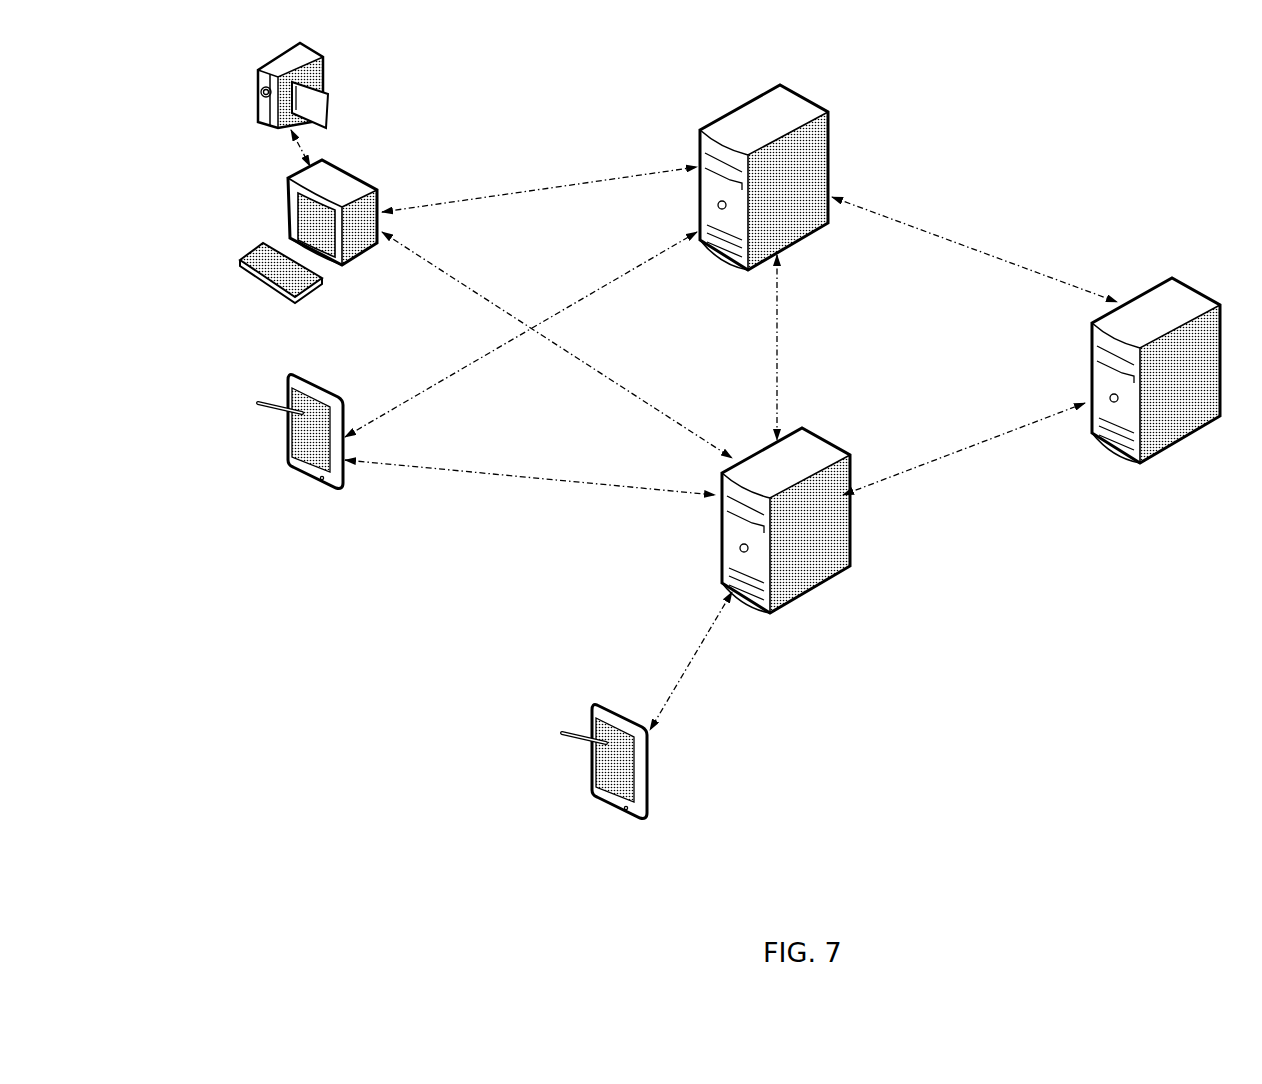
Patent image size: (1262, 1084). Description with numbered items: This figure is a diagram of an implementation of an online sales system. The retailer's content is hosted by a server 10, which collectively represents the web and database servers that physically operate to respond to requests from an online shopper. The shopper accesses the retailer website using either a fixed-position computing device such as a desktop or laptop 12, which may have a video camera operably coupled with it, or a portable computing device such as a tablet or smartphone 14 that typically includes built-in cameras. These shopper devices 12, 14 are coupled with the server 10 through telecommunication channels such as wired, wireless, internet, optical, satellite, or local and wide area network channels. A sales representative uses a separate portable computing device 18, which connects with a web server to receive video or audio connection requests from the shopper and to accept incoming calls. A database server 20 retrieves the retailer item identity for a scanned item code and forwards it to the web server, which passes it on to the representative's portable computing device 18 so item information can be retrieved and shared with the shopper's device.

The server 10 is at (818, 102).
The computing device 12 is at (363, 177).
The portable computing device 14 is at (297, 477).
The portable computing device 18 is at (600, 802).
The database server 20 is at (1185, 437).